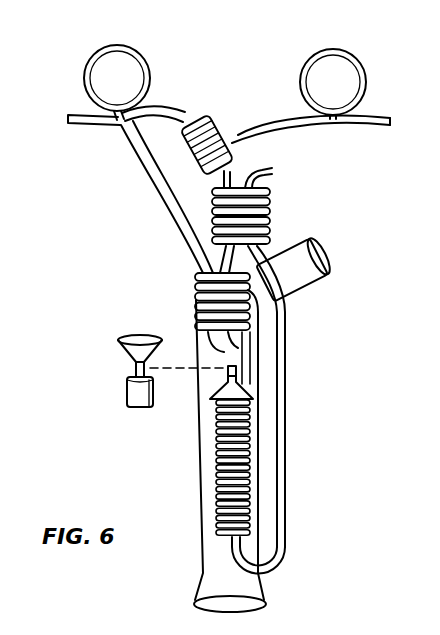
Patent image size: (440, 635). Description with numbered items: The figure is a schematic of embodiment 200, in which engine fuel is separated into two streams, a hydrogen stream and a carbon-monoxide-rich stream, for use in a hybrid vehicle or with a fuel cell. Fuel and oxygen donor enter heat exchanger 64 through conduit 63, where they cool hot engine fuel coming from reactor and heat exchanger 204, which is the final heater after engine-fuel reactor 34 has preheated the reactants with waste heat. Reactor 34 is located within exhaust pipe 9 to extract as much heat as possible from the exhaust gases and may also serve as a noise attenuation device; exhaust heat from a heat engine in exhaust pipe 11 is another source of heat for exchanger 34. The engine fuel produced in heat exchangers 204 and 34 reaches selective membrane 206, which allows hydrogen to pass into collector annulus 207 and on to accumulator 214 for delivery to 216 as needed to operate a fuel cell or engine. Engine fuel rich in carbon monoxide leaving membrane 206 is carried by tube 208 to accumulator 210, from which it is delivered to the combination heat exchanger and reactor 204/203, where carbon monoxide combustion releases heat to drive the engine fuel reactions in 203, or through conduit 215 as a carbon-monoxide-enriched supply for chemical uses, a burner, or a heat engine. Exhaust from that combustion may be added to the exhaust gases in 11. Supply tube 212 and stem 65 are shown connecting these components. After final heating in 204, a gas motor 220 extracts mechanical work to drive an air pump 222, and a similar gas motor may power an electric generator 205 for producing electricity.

The embodiment 200 is at (66, 246).
The accumulator 210 is at (131, 53).
The accumulator 214 is at (355, 57).
The conduit 215 is at (71, 127).
The tube 208 is at (160, 108).
The supply tube 212 is at (143, 178).
The selective membrane 206 is at (213, 117).
The delivery outlet 216 is at (364, 120).
The collector annulus 207 is at (241, 150).
The inlet stem 65 is at (212, 209).
The conduit 63 is at (274, 168).
The heat exchanger 64 is at (272, 222).
The exhaust pipe 11 is at (308, 278).
The reactor 203 is at (279, 327).
The heat exchanger 204 is at (198, 302).
The exhaust pipe 9 is at (203, 575).
The air pump 222 is at (120, 342).
The electric generator 205 is at (127, 392).
The gas motor 220 is at (212, 398).
The engine-fuel reactor 34 is at (218, 485).